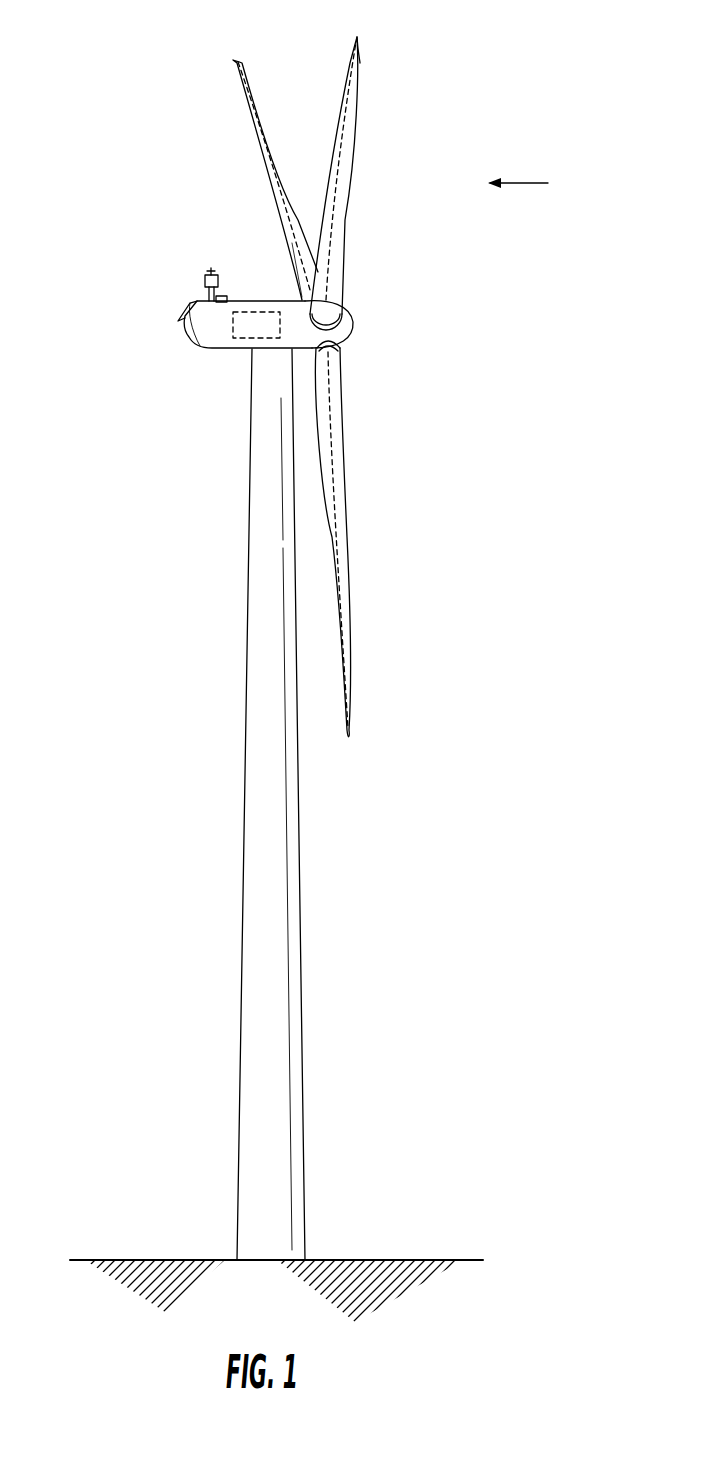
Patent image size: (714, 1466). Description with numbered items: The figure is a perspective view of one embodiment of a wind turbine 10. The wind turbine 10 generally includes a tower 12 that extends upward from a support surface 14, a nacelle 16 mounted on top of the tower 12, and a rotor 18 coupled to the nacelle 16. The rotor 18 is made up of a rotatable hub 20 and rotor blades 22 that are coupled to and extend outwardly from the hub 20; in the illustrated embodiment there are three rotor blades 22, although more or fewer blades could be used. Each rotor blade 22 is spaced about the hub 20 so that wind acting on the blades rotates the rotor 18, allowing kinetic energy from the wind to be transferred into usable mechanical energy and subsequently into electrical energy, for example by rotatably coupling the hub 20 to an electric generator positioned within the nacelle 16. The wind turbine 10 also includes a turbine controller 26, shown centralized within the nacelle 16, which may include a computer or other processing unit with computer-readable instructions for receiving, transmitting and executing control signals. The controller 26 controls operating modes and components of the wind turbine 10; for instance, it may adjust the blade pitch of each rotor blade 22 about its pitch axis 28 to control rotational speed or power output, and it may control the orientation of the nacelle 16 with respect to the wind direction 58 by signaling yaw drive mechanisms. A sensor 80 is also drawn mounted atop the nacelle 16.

The wind turbine 10 is at (459, 125).
The tower 12 is at (253, 928).
The support surface 14 is at (155, 1259).
The nacelle 16 is at (224, 350).
The rotor 18 is at (364, 296).
The rotatable hub 20 is at (356, 328).
The rotor blade 22 is at (342, 162).
The turbine controller 26 is at (258, 312).
The pitch axis 28 is at (273, 178).
The wind direction 58 is at (531, 183).
The sensor 80 is at (205, 281).